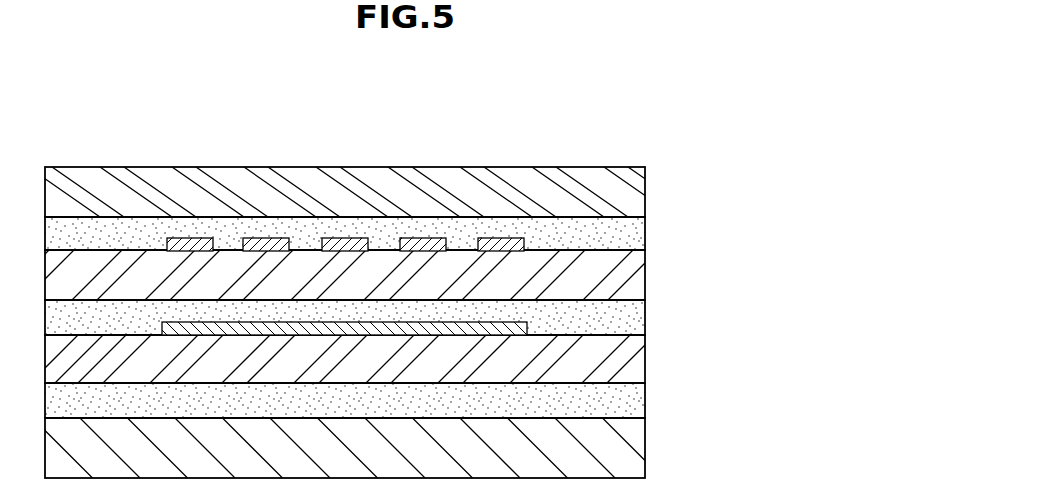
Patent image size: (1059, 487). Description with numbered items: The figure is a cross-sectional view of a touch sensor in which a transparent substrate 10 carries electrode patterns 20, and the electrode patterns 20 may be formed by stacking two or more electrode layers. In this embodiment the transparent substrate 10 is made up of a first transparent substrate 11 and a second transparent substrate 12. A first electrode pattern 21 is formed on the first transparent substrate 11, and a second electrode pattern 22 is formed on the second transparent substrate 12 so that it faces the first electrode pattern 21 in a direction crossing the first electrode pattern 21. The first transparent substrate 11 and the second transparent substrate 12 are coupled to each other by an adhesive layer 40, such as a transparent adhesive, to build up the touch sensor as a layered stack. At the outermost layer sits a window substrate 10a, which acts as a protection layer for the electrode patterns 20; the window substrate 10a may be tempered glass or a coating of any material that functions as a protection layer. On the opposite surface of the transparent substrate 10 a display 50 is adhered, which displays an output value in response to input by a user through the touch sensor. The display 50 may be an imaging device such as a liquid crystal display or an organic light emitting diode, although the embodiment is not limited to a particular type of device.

The transparent substrate 10 is at (385, 316).
The window substrate 10a is at (630, 190).
The first transparent substrate 11 is at (630, 291).
The second transparent substrate 12 is at (371, 359).
The electrode patterns 20 is at (344, 203).
The first electrode pattern 21 is at (343, 238).
The second electrode pattern 22 is at (423, 322).
The adhesive layer 40 is at (630, 234).
The display 50 is at (630, 458).